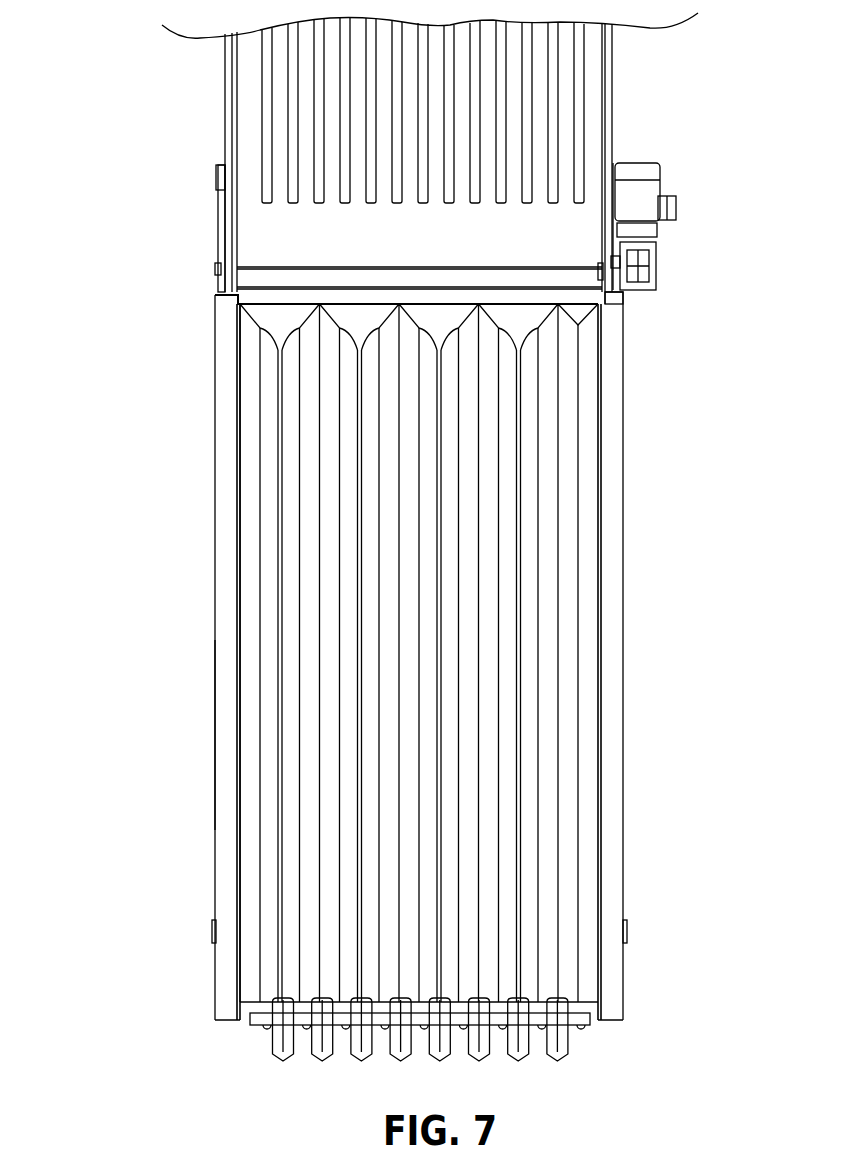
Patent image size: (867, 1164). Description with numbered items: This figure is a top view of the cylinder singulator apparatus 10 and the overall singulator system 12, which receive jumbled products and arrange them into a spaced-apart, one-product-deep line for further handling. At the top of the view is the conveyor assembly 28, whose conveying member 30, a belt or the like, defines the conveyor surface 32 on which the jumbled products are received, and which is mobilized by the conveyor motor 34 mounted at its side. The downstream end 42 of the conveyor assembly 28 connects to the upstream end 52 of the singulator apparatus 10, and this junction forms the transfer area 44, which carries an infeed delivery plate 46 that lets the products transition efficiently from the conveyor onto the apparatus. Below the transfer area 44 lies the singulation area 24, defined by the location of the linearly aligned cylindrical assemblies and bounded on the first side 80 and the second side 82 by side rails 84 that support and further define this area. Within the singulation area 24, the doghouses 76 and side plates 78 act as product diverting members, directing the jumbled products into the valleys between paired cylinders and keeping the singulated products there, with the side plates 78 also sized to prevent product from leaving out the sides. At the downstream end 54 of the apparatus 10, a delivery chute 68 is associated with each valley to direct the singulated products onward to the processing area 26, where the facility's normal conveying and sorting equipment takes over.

The singulator apparatus 10 is at (213, 765).
The singulator system 12 is at (668, 433).
The singulation area 24 is at (183, 679).
The processing area 26 is at (642, 1077).
The conveyor assembly 28 is at (208, 128).
The conveying member 30 is at (275, 75).
The conveyor surface 32 is at (565, 120).
The conveyor motor 34 is at (660, 207).
The downstream end 42 is at (205, 280).
The transfer area 44 is at (318, 270).
The infeed delivery plate 46 is at (275, 316).
The upstream end 52 is at (628, 303).
The downstream end 54 is at (205, 1020).
The delivery chute 68 is at (277, 1043).
The doghouses 76 is at (490, 657).
The side plates 78 is at (255, 600).
The first side 80 is at (130, 632).
The second side 82 is at (710, 662).
The side rails 84 is at (228, 492).